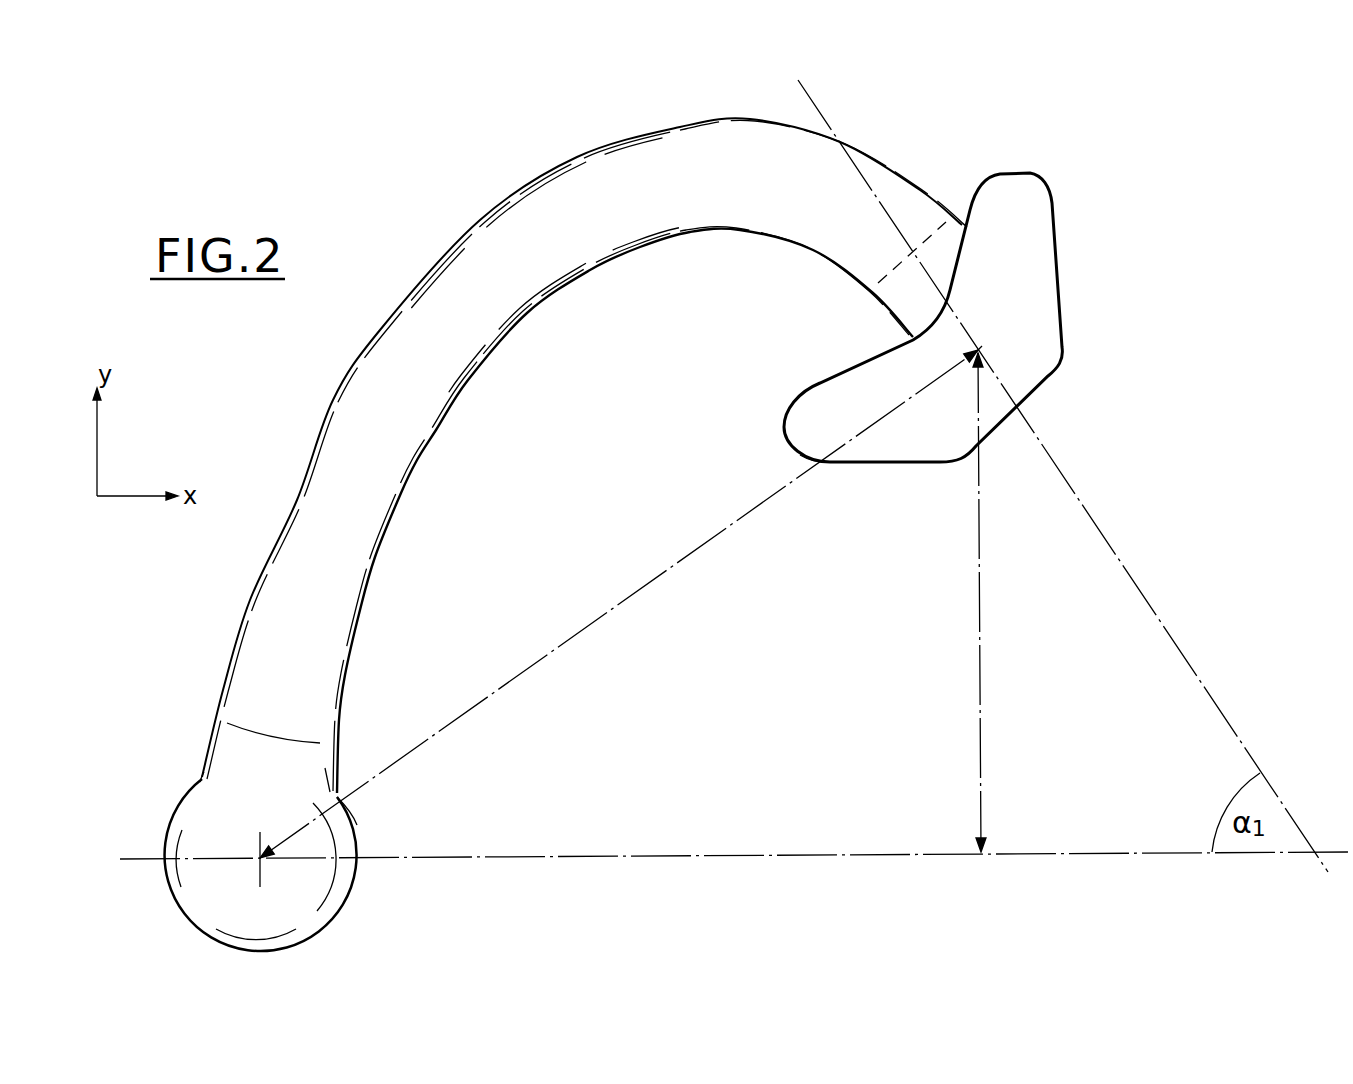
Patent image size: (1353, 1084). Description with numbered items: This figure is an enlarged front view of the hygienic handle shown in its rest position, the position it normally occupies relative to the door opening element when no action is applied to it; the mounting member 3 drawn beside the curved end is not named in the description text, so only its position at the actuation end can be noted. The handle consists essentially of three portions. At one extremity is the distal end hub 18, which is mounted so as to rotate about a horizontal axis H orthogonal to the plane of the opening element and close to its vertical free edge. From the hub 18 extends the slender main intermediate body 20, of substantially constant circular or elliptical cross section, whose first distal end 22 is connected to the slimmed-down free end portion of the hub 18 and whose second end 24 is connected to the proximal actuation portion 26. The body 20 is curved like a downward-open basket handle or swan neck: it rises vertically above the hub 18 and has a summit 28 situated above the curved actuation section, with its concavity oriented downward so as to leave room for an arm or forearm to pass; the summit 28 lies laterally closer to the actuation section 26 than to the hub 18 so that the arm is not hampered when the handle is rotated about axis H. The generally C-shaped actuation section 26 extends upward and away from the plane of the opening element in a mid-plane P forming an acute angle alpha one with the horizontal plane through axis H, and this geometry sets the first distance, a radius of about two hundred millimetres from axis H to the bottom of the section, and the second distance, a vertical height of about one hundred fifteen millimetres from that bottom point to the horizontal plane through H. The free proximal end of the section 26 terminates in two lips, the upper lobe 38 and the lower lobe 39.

The fixing foot / mounting member 3 is at (1015, 213).
The distal end hub 18 is at (360, 840).
The main intermediate body 20 is at (586, 428).
The first distal end 22 is at (322, 742).
The second end 24 is at (873, 294).
The proximal actuation portion 26 is at (920, 297).
The summit 28 is at (713, 120).
The upper lobe 38 is at (987, 350).
The lower lobe 39 is at (820, 433).